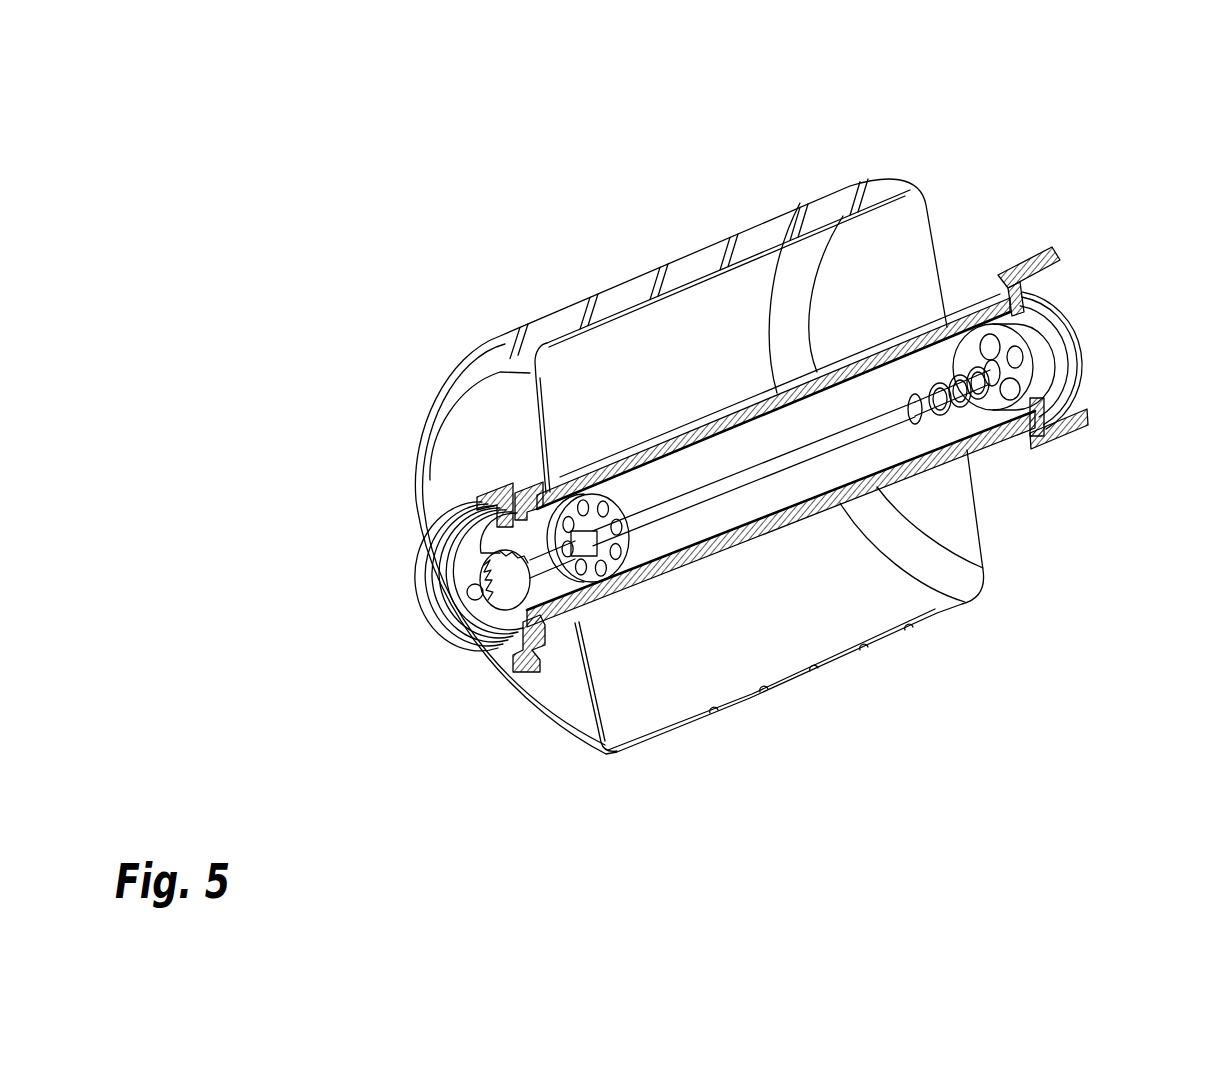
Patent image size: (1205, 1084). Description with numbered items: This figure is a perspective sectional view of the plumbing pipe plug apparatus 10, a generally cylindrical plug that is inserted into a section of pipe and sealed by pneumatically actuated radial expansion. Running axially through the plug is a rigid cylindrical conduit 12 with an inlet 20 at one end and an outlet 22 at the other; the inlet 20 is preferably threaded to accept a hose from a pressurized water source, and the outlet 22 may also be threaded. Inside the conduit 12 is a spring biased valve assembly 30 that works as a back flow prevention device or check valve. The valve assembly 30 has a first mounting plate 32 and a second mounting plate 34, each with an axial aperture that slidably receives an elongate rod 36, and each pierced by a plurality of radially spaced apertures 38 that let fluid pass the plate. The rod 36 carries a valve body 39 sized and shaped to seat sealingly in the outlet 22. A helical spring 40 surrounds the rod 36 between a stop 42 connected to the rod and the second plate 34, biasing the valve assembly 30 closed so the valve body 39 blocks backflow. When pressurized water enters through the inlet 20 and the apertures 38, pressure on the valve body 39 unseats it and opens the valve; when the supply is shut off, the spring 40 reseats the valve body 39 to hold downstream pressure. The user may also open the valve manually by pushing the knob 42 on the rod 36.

The plumbing pipe plug apparatus 10 is at (535, 180).
The cylindrical conduit 12 is at (752, 405).
The inlet 20 is at (495, 487).
The outlet 22 is at (1037, 262).
The valve assembly 30 is at (918, 362).
The first mounting plate 32 is at (628, 552).
The second mounting plate 34 is at (1027, 388).
The elongate rod 36 is at (717, 503).
The radially spaced apertures 38 is at (600, 575).
The valve body 39 is at (1060, 386).
The helical spring 40 is at (951, 407).
The stop 42 is at (470, 594).